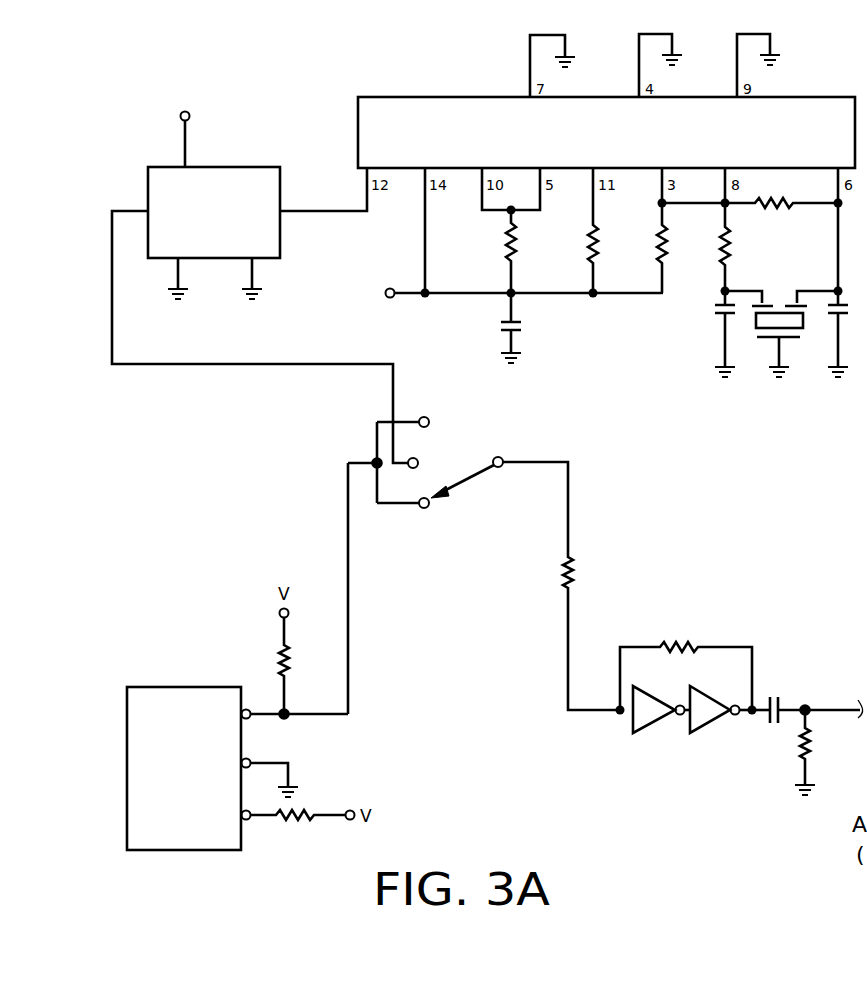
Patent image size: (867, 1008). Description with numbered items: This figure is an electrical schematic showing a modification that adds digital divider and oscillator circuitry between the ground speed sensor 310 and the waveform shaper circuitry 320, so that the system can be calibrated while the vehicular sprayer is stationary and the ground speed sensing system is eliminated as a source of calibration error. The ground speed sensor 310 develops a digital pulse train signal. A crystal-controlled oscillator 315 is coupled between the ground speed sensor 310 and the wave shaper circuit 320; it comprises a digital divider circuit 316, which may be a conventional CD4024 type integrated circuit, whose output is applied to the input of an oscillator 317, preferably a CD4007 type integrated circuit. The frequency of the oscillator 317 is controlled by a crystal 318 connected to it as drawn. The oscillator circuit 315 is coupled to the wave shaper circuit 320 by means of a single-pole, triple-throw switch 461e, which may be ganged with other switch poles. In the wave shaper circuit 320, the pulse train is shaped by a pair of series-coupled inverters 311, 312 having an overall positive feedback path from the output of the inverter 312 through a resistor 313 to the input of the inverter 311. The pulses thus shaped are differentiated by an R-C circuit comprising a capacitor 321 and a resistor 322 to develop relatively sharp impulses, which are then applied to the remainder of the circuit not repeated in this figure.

The ground speed sensor 310 is at (145, 850).
The inverter 311 is at (648, 712).
The inverter 312 is at (708, 712).
The resistor 313 is at (684, 640).
The crystal-controlled oscillator 315 is at (546, 365).
The digital divider circuit 316 is at (243, 167).
The oscillator 317 is at (418, 97).
The crystal 318 is at (797, 318).
The waveform shaper circuitry 320 is at (693, 710).
The capacitor 321 is at (785, 698).
The resistor 322 is at (790, 758).
The single-pole, triple-throw switch 461e is at (466, 483).